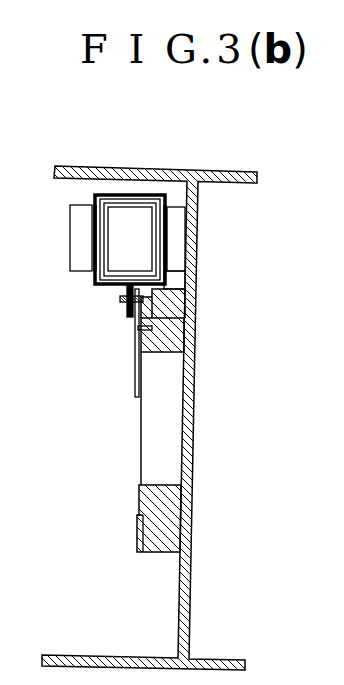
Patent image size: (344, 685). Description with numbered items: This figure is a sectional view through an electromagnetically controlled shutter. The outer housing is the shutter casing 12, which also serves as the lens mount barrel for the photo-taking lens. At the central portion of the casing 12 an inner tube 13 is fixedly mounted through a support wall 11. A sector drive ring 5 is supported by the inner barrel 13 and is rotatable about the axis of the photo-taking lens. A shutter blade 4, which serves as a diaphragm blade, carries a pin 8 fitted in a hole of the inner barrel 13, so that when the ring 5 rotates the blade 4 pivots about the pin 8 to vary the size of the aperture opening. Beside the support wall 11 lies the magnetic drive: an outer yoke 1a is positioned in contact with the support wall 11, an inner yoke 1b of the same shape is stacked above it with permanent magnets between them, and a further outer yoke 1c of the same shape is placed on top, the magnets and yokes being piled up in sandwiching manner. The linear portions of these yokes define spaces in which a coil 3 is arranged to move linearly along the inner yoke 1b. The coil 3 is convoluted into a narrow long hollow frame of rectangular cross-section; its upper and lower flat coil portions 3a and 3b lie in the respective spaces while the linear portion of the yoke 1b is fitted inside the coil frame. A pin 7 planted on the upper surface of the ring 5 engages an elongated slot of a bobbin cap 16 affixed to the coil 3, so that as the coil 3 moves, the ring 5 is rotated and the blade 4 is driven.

The shutter casing 12 is at (135, 168).
The coil 3 is at (150, 197).
The upper flat coil portion 3a is at (105, 215).
The lower flat coil portion 3b is at (163, 228).
The outer yoke 1a is at (177, 238).
The inner yoke 1b is at (120, 260).
The outer yoke 1c is at (80, 233).
The support wall 11 is at (190, 262).
The sector drive ring 5 is at (153, 312).
The inner tube 13 is at (183, 335).
The pin 7 is at (120, 298).
The bobbin cap 16 is at (128, 313).
The pin 8 is at (140, 331).
The shutter blade 4 is at (137, 388).